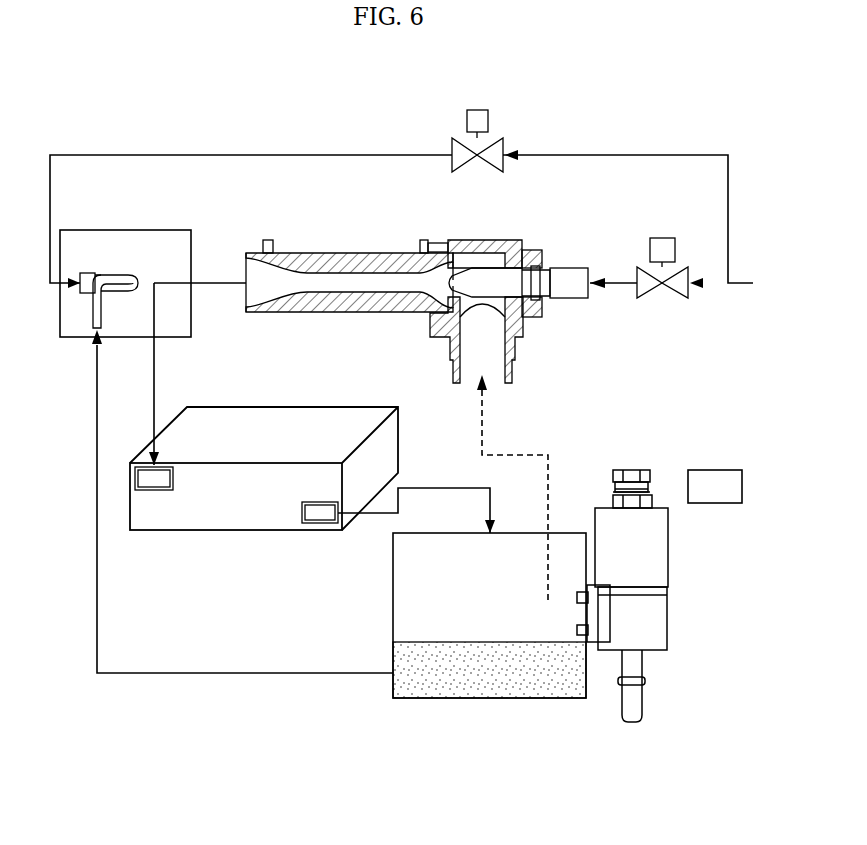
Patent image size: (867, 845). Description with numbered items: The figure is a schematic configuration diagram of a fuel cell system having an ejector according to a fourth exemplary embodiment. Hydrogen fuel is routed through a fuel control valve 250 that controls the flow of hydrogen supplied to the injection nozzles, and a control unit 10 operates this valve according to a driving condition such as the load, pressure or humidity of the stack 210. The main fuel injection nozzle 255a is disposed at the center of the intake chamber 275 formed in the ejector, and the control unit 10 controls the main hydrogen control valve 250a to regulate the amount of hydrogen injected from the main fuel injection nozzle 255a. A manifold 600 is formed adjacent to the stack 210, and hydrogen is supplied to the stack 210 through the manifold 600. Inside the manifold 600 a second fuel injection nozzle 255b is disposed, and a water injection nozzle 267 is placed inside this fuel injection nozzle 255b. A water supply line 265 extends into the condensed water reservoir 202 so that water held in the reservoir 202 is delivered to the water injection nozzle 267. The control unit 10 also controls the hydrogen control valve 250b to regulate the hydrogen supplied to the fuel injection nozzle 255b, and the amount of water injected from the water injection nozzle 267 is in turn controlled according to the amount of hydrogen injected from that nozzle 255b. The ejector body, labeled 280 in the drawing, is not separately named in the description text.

The control unit 10 is at (711, 469).
The condensed water reservoir 202 is at (489, 699).
The stack 210 is at (281, 407).
The fuel control valve 250 is at (661, 308).
The main hydrogen control valve 250a is at (669, 227).
The hydrogen control valve 250b is at (502, 126).
The main fuel injection nozzle 255a is at (471, 282).
The fuel injection nozzle 255b is at (93, 272).
The water supply line 265 is at (94, 322).
The water injection nozzle 267 is at (125, 293).
The intake chamber 275 is at (495, 262).
The venturi tube 280 is at (357, 253).
The manifold 600 is at (167, 230).